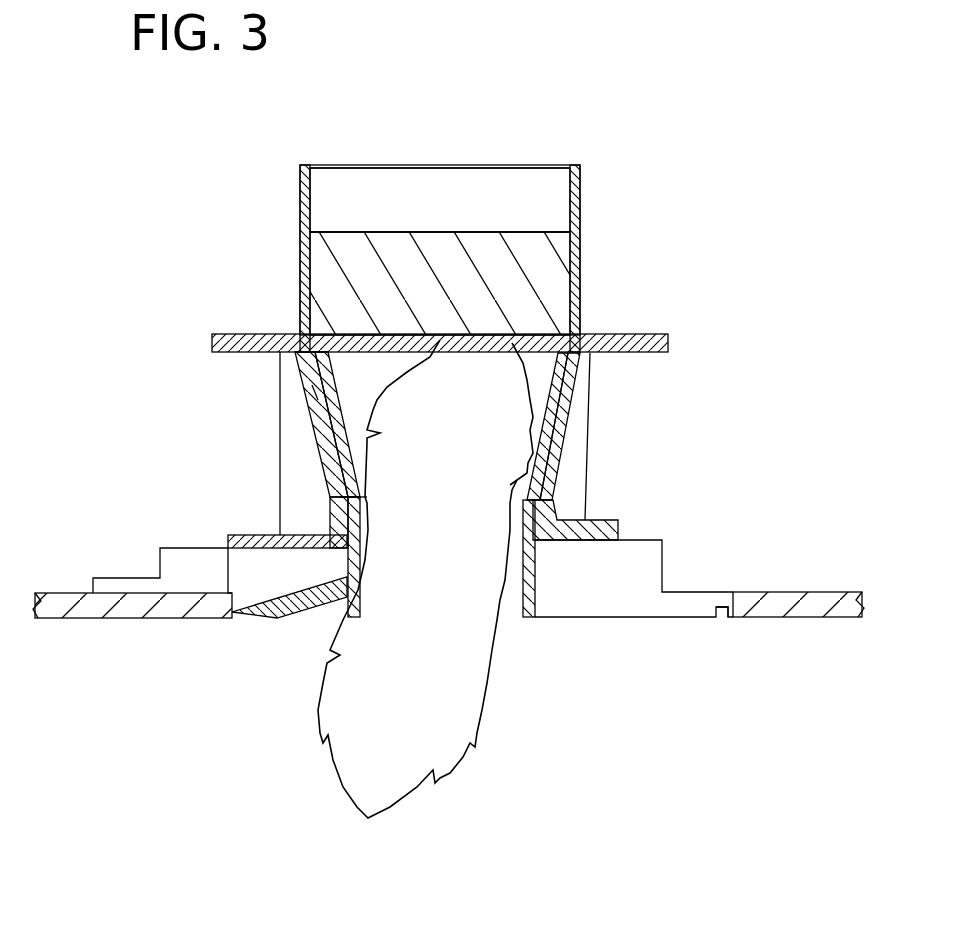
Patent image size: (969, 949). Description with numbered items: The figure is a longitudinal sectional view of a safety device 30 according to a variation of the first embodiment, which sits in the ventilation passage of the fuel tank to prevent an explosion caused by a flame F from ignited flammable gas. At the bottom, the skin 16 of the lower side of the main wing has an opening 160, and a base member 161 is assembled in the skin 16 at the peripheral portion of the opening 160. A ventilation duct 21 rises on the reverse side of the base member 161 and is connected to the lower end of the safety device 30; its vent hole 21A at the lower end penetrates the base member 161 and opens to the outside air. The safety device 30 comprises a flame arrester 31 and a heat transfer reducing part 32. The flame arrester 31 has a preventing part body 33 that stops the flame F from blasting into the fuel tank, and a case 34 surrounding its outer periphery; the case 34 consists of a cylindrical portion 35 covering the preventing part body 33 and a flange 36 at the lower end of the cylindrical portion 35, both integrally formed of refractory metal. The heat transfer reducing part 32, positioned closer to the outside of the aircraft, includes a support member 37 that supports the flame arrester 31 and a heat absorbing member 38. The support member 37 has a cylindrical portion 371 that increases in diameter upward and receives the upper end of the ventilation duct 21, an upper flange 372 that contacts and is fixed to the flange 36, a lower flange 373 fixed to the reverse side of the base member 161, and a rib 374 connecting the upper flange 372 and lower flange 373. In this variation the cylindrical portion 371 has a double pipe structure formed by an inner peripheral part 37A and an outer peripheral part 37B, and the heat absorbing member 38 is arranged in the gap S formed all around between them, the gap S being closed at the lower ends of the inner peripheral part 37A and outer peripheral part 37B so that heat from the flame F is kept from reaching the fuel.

The safety device 30 is at (694, 145).
The flame arrester 31 is at (540, 114).
The preventing part body 33 is at (430, 232).
The case 34 is at (503, 195).
The cylindrical portion 35 is at (580, 256).
The flange 36 is at (648, 334).
The upper flange 372 is at (662, 356).
The cylindrical portion 371 is at (295, 197).
The inner peripheral part 37A is at (327, 353).
The outer peripheral part 37B is at (296, 357).
The heat transfer reducing part 32 is at (143, 423).
The support member 37 is at (330, 428).
The heat absorbing member 38 is at (338, 450).
The gap S is at (316, 393).
The rib 374 is at (280, 494).
The lower flange 373 is at (606, 518).
The ventilation duct 21 is at (300, 620).
The vent hole 21A is at (513, 620).
The base member 161 is at (607, 620).
The opening 160 is at (727, 620).
The skin 16 is at (800, 620).
The flame F is at (333, 762).